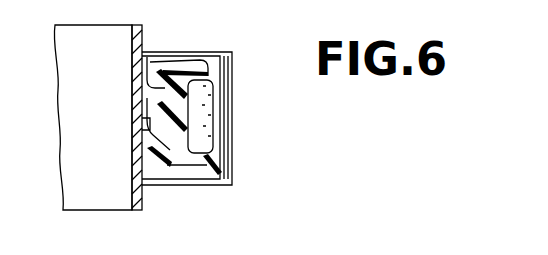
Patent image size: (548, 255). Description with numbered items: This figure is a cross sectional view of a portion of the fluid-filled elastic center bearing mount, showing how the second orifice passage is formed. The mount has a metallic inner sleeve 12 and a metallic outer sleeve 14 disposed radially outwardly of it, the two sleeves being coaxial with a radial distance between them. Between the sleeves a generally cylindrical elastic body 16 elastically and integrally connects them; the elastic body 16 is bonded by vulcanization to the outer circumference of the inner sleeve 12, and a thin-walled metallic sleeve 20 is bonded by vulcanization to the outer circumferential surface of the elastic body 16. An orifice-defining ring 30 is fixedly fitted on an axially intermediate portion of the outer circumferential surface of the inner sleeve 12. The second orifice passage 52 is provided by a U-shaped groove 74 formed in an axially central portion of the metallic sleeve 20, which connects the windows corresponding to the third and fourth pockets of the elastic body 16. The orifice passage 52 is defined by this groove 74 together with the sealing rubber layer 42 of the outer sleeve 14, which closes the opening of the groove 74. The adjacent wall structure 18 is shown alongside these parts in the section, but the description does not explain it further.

The inner sleeve 12 is at (142, 207).
The outer sleeve 14 is at (228, 167).
The elastic body 16 is at (157, 87).
The support wall 18 is at (132, 50).
The metallic sleeve 20 is at (220, 60).
The orifice-defining ring 30 is at (142, 123).
The sealing rubber layer 42 is at (222, 90).
The second orifice passage 52 is at (208, 118).
The U-shaped groove 74 is at (200, 137).